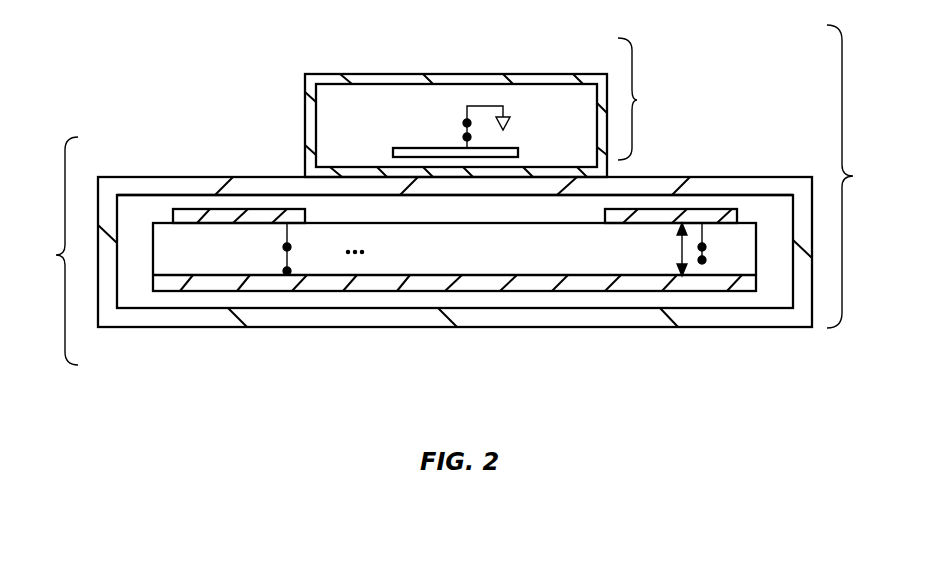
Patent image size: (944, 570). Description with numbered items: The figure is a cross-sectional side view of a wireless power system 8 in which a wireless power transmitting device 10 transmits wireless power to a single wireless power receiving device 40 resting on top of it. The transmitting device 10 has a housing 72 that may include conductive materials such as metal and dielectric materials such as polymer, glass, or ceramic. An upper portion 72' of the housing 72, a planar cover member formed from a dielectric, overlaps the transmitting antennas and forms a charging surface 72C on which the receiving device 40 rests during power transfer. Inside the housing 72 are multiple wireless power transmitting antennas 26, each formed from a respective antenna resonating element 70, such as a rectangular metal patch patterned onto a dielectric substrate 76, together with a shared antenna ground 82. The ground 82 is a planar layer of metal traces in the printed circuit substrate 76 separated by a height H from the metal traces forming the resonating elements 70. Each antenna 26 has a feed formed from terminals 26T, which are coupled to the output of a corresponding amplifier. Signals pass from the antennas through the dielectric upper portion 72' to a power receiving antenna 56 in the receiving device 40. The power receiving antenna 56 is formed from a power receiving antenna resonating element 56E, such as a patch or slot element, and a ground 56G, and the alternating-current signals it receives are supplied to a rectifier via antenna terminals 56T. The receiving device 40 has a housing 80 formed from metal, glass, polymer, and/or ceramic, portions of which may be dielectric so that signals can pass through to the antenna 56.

The wireless power system 8 is at (847, 176).
The wireless power transmitting device 10 is at (54, 251).
The housing 72 is at (455, 282).
The upper portion 72' is at (409, 157).
The charging surface 72C is at (257, 175).
The antenna resonating element 70 is at (190, 216).
The substrate 76 is at (153, 252).
The antenna ground 82 is at (372, 285).
The wireless power transmitting antenna 26 is at (303, 240).
The terminals 26T is at (284, 247).
The height H is at (672, 249).
The wireless power receiving device 40 is at (644, 99).
The housing 80 is at (305, 84).
The power receiving antenna 56 is at (500, 91).
The ground 56G is at (513, 123).
The antenna terminals 56T is at (463, 123).
The power receiving antenna resonating element 56E is at (517, 148).